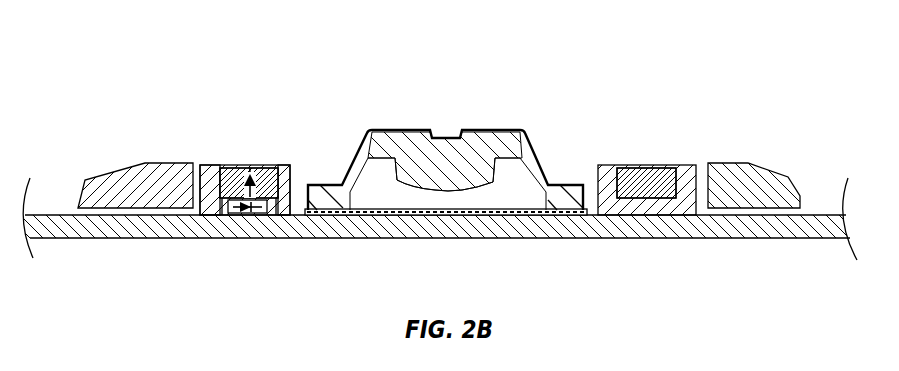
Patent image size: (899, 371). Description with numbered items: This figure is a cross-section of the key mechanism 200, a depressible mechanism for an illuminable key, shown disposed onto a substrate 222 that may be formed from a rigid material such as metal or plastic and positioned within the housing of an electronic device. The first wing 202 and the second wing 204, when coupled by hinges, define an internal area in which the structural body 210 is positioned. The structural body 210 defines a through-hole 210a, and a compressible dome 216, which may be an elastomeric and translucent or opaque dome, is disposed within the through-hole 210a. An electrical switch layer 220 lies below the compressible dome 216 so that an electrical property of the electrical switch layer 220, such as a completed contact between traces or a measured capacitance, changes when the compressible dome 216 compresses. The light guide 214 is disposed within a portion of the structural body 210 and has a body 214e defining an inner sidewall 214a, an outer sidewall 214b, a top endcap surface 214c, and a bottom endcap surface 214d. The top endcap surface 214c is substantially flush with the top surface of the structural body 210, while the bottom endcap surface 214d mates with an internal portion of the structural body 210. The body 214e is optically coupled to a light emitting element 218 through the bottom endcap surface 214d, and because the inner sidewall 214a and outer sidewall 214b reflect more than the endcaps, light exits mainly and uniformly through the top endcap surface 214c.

The key mechanism 200 is at (150, 70).
The first wing 202 is at (92, 176).
The second wing 204 is at (787, 175).
The structural body 210 is at (290, 208).
The through-hole 210a is at (575, 158).
The light guide 214 is at (243, 168).
The inner sidewall 214a is at (279, 182).
The outer sidewall 214b is at (218, 180).
The top endcap surface 214c is at (271, 167).
The bottom endcap surface 214d is at (222, 208).
The body 214e is at (224, 167).
The compressible dome 216 is at (430, 186).
The light emitting element 218 is at (253, 214).
The electrical switch layer 220 is at (472, 214).
The substrate 222 is at (545, 239).